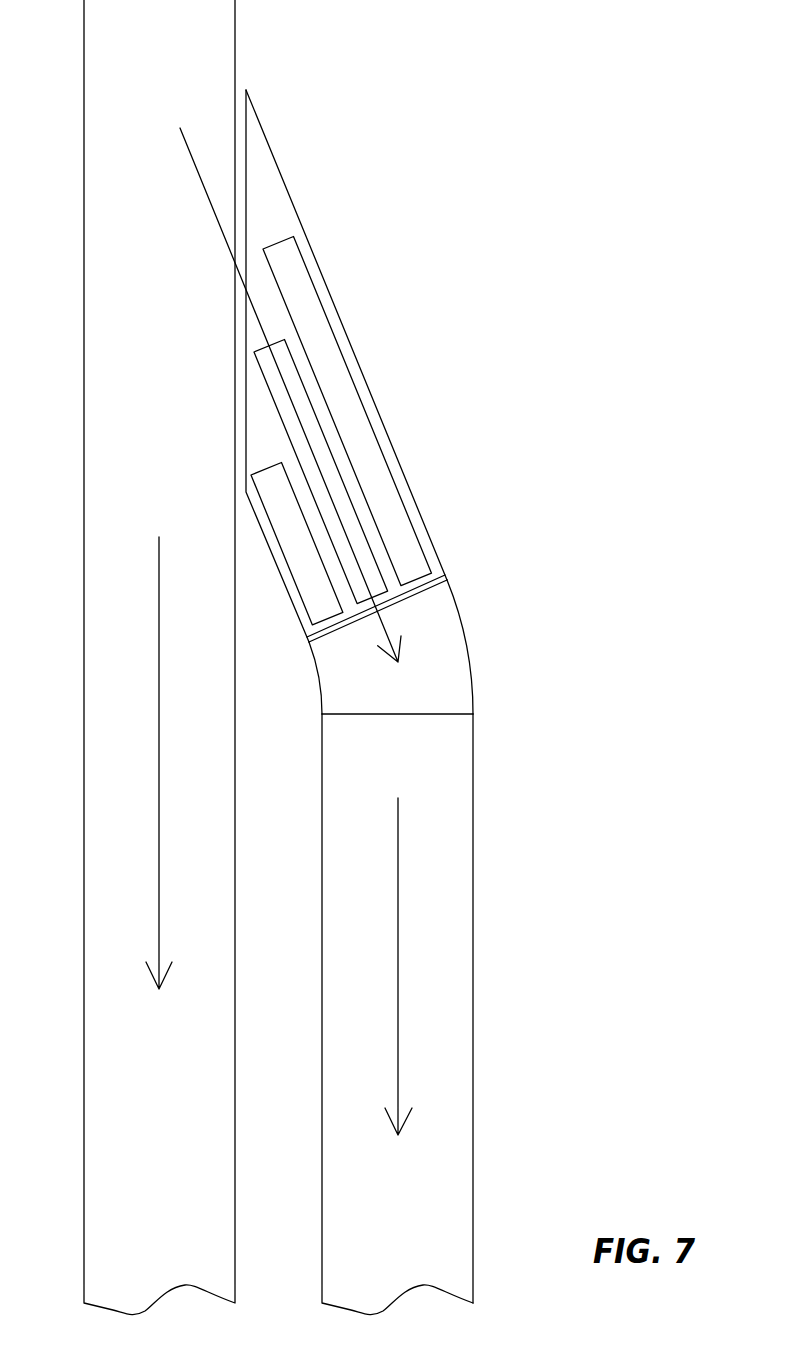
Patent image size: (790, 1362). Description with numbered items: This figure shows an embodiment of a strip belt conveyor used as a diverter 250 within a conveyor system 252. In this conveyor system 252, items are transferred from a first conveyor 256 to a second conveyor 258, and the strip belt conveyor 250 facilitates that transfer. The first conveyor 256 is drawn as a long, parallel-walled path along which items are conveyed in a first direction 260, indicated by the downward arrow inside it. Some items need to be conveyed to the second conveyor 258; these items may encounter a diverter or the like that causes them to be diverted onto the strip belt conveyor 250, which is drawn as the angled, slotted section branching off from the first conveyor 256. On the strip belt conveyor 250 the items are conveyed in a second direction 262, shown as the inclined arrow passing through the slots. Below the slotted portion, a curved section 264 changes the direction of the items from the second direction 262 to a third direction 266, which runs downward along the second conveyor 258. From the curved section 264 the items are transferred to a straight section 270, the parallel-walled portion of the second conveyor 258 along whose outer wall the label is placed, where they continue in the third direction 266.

The strip belt conveyor diverter 250 is at (398, 453).
The conveyor system 252 is at (465, 140).
The first conveyor 256 is at (236, 30).
The second conveyor 258 is at (446, 1014).
The first direction 260 is at (159, 789).
The second direction 262 is at (200, 180).
The curved section 264 is at (468, 643).
The third direction 266 is at (398, 967).
The straight section 270 is at (474, 811).